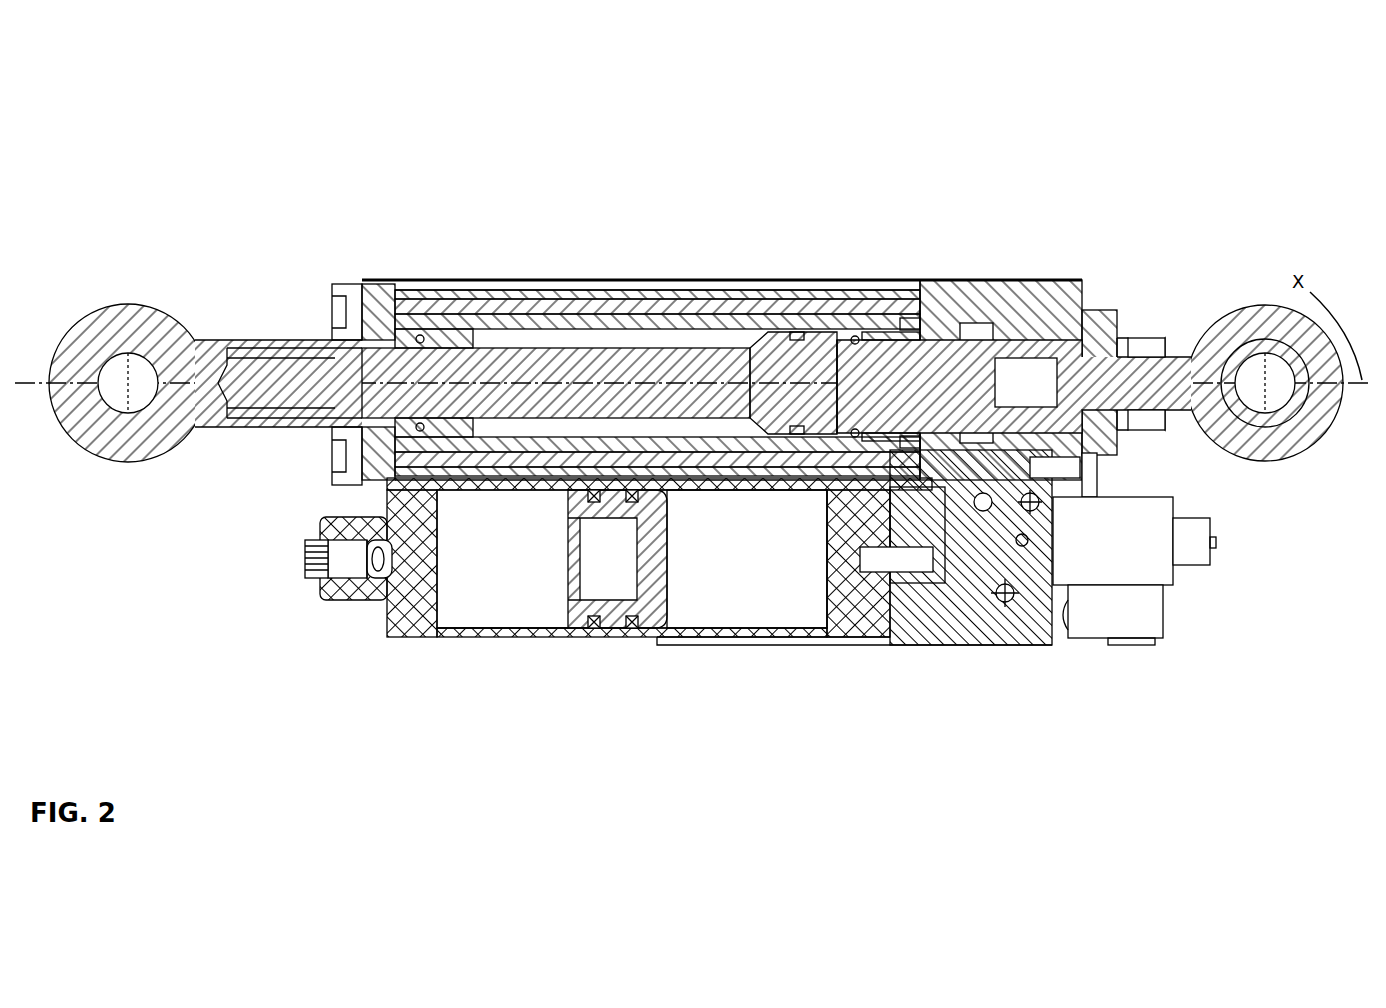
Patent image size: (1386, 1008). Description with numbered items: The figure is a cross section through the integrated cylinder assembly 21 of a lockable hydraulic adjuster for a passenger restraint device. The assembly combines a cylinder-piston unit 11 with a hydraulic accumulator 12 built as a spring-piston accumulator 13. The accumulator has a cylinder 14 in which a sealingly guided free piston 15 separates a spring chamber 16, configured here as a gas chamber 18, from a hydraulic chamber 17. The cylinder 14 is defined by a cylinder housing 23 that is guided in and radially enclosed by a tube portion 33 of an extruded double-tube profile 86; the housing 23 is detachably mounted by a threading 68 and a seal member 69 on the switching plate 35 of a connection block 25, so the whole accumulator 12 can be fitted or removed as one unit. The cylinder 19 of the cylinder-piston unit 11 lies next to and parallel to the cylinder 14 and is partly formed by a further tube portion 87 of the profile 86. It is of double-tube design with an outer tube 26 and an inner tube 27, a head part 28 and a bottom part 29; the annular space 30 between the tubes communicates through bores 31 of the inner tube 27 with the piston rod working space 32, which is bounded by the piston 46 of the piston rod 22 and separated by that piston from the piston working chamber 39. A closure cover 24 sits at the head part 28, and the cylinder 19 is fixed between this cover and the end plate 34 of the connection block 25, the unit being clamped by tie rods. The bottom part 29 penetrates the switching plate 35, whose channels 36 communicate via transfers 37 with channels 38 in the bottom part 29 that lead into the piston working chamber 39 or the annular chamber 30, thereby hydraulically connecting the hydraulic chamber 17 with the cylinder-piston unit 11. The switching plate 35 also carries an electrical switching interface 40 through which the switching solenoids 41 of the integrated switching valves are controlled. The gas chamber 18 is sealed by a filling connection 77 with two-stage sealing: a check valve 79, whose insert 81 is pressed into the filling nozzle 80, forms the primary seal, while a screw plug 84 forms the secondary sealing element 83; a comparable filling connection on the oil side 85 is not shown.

The cylinder-piston unit 11 is at (657, 208).
The integrated cylinder assembly 21 is at (459, 177).
The piston rod 22 is at (275, 373).
The closure cover 24 is at (378, 293).
The head part 28 is at (433, 293).
The bores 31 is at (470, 335).
The piston rod working space 32 is at (497, 335).
The inner tube 27 is at (530, 310).
The annular space 30 is at (557, 300).
The outer tube 26 is at (573, 298).
The cylinder 19 is at (607, 284).
The extruded double-tube profile 86 is at (667, 273).
The further tube portion 87 is at (705, 295).
The piston 46 is at (767, 335).
The piston working chamber 39 is at (829, 335).
The channels 38 is at (858, 345).
The end plate 34 is at (928, 300).
The bottom part 29 is at (1030, 330).
The transfers 37 is at (1010, 435).
The channels 36 is at (985, 500).
The oil side 85 is at (1237, 494).
The filling nozzle 80 is at (393, 540).
The secondary sealing element 83 is at (279, 556).
The screw plug 84 is at (310, 542).
The filling connection 77 is at (301, 587).
The check valve 79 is at (382, 565).
The insert 81 is at (376, 608).
The cylinder housing 23 is at (437, 637).
The spring chamber 16 is at (632, 588).
The gas chamber 18 is at (480, 615).
The cylinder 14 is at (517, 641).
The free piston 15 is at (612, 620).
The hydraulic chamber 17 is at (692, 603).
The tube portion 33 is at (750, 643).
The hydraulic accumulator 12 is at (854, 692).
The spring-piston accumulator 13 is at (789, 663).
The seal member 69 is at (893, 590).
The threading 68 is at (920, 585).
The connection block 25 is at (987, 660).
The switching plate 35 is at (1027, 643).
The electrical switching interface 40 is at (1152, 638).
The switching solenoids 41 is at (1192, 548).